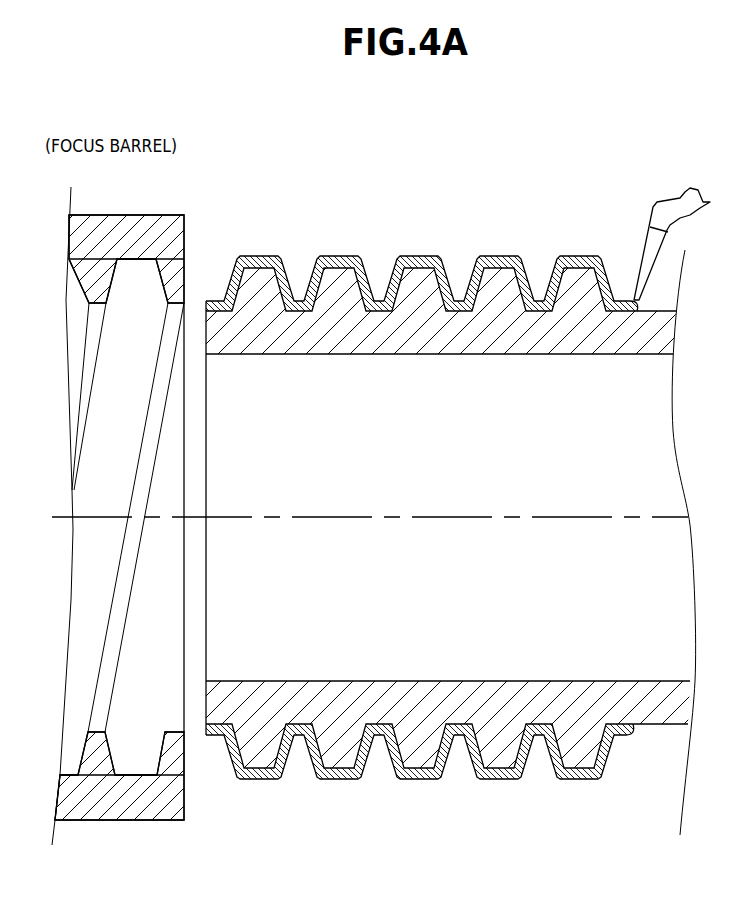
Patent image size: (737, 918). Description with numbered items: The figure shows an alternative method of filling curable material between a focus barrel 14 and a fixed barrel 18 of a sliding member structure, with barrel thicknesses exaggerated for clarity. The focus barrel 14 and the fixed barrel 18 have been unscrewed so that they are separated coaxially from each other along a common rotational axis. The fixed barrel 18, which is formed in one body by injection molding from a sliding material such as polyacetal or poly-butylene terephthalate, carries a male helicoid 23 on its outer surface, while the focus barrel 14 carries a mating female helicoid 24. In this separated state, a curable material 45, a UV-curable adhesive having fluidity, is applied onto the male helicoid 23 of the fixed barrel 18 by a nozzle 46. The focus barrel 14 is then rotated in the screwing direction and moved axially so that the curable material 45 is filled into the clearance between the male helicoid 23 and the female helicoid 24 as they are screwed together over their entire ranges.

The focus barrel 14 is at (110, 230).
The female helicoid 24 is at (111, 288).
The fixed barrel 18 is at (575, 343).
The male helicoid 23 is at (461, 318).
The curable material 45 is at (500, 262).
The nozzle 46 is at (662, 210).